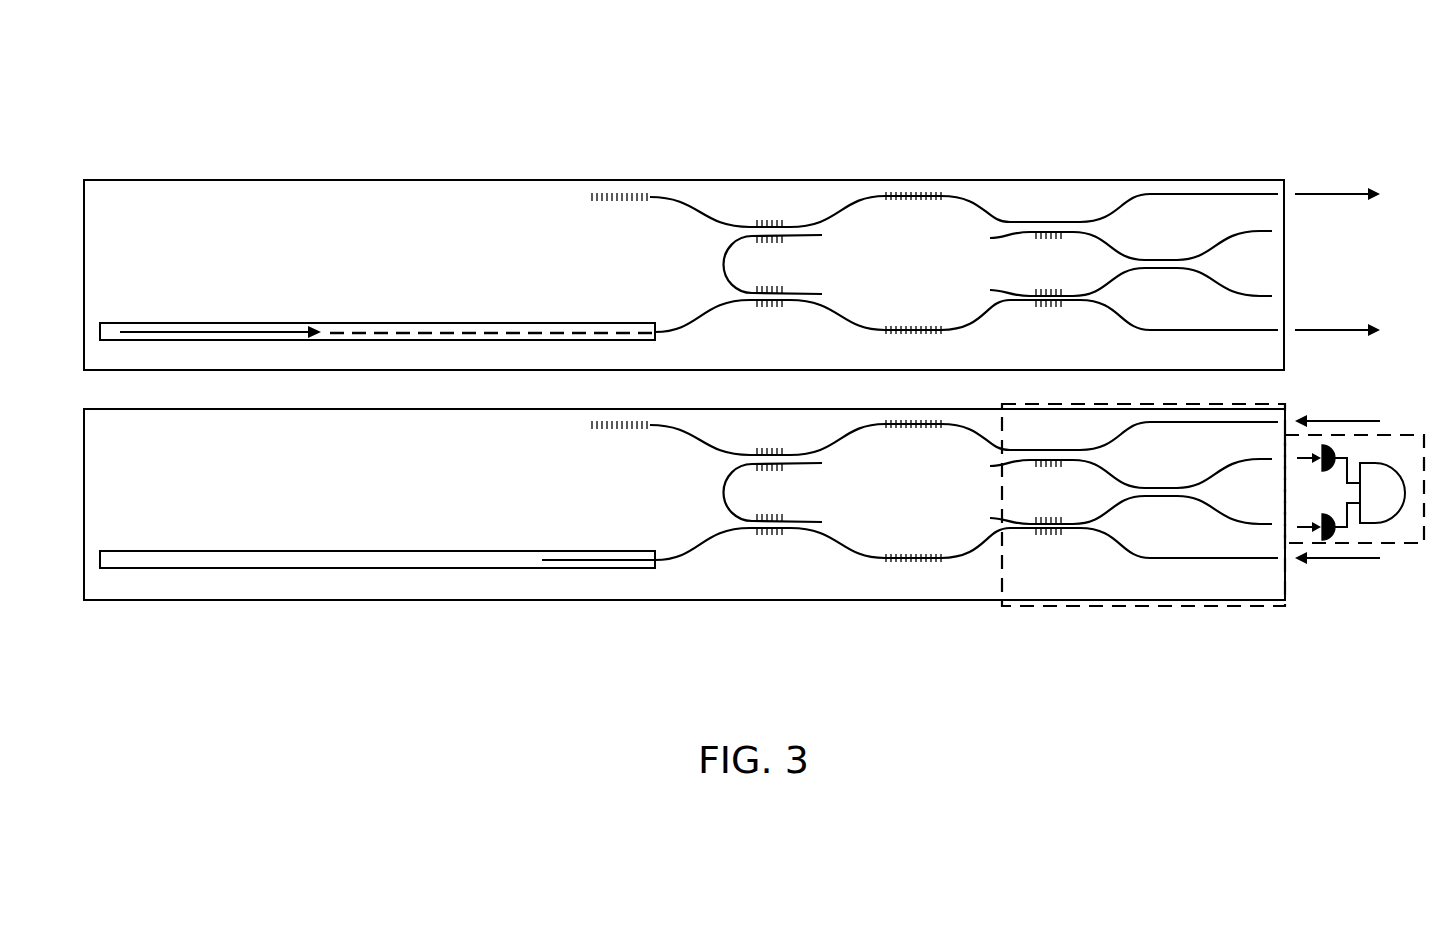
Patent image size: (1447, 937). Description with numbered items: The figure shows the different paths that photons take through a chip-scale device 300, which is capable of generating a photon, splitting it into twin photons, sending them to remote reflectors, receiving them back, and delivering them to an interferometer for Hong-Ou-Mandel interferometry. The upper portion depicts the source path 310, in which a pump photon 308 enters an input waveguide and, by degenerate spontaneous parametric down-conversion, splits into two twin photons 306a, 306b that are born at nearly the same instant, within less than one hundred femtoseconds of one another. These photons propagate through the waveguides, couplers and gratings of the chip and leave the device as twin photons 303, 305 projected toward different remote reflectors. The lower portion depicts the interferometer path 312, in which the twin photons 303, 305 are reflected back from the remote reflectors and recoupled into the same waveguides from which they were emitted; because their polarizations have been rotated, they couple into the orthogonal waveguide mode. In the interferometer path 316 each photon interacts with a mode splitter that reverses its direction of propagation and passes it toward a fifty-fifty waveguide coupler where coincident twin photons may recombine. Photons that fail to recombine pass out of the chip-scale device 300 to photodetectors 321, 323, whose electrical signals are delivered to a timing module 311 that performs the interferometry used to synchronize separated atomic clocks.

The chip-scale device 300 is at (471, 180).
The source path 310 is at (241, 116).
The interferometer path 312 is at (198, 670).
The twin photon 303 is at (1333, 192).
The twin photon 305 is at (1343, 329).
The pump photon 308 is at (225, 322).
The twin photon 306a is at (376, 322).
The twin photon 306b is at (385, 335).
The interferometer path 316 is at (1085, 607).
The timing module 311 is at (1398, 515).
The photodetector 321 is at (1342, 452).
The photodetector 323 is at (1320, 522).